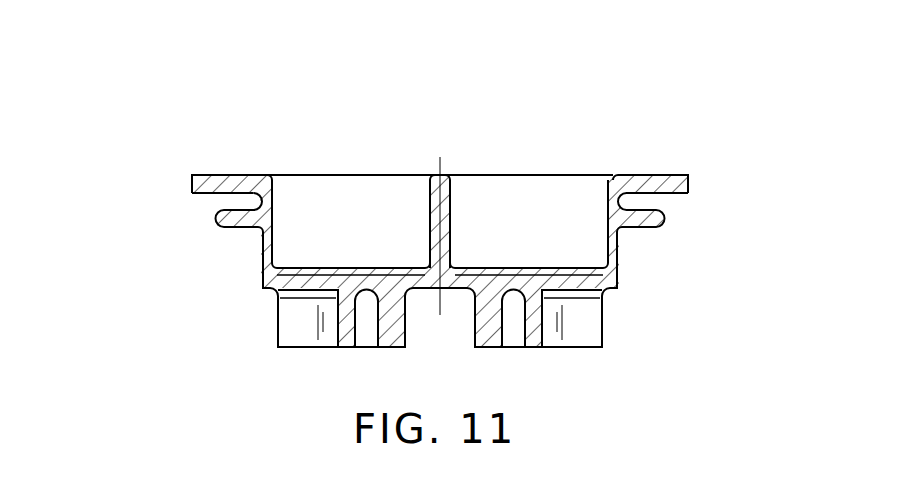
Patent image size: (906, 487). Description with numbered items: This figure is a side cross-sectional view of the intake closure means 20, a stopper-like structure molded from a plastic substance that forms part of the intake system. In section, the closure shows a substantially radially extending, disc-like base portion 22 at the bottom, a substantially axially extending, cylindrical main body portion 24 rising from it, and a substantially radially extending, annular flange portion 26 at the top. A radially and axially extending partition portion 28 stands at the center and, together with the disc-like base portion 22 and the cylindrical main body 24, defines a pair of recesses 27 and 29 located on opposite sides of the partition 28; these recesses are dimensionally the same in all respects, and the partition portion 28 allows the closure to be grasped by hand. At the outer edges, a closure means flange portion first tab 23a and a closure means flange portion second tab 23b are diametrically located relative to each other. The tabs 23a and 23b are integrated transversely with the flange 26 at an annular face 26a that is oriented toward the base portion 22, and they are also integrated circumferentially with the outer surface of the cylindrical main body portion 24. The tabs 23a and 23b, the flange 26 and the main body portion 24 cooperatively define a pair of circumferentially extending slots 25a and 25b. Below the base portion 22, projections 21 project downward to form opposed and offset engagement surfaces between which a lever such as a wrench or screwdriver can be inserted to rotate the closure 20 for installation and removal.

The intake closure means 20 is at (648, 102).
The projections 21 is at (542, 347).
The disc-like base portion 22 is at (348, 288).
The closure means flange portion first tab 23a is at (663, 220).
The closure means flange portion second tab 23b is at (222, 218).
The cylindrical main body portion 24 is at (615, 247).
The slot 25a is at (690, 202).
The slot 25b is at (192, 208).
The annular flange portion 26 is at (240, 180).
The annular face 26a is at (197, 197).
The recess 27 is at (340, 204).
The partition portion 28 is at (440, 213).
The recess 29 is at (532, 205).